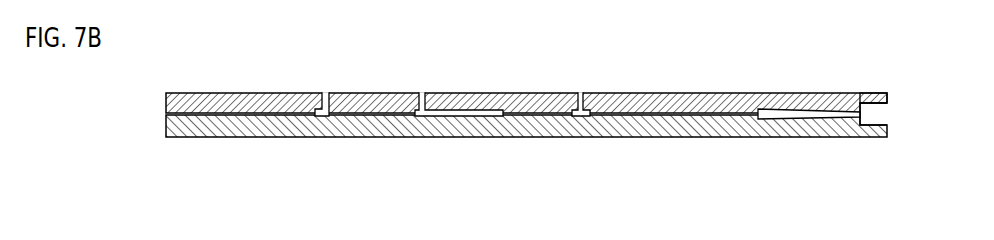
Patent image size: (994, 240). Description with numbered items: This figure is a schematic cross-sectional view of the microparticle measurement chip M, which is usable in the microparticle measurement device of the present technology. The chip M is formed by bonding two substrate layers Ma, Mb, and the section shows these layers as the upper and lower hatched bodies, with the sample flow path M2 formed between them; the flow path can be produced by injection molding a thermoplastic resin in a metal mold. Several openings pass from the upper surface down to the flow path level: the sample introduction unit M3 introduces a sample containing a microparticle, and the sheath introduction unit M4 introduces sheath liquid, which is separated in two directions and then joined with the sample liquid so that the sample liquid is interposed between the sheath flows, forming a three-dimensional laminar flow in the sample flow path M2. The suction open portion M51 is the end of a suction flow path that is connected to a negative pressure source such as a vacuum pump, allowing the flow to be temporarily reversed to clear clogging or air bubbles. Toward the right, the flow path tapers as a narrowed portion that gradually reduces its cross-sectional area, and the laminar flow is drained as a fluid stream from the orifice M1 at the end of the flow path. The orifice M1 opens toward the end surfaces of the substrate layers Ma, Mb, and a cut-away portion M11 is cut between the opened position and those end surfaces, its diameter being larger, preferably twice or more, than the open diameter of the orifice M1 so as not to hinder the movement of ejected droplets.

The microparticle measurement chip M is at (551, 103).
The substrate layer Ma is at (211, 93).
The substrate layer Mb is at (208, 138).
The orifice M1 is at (862, 107).
The cut-away portion M11 is at (879, 93).
The sample flow path M2 is at (825, 112).
The sample introduction unit M3 is at (581, 93).
The sheath introduction unit M4 is at (423, 93).
The suction open portion M51 is at (327, 93).